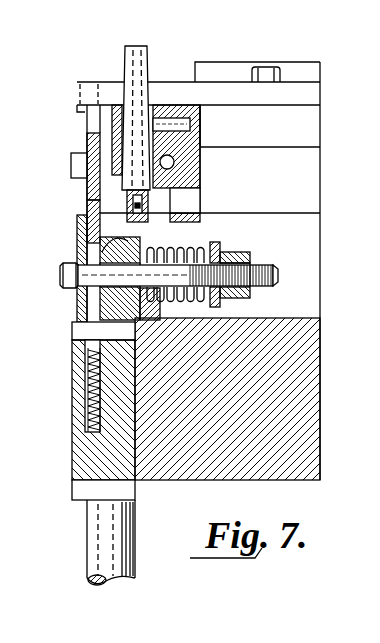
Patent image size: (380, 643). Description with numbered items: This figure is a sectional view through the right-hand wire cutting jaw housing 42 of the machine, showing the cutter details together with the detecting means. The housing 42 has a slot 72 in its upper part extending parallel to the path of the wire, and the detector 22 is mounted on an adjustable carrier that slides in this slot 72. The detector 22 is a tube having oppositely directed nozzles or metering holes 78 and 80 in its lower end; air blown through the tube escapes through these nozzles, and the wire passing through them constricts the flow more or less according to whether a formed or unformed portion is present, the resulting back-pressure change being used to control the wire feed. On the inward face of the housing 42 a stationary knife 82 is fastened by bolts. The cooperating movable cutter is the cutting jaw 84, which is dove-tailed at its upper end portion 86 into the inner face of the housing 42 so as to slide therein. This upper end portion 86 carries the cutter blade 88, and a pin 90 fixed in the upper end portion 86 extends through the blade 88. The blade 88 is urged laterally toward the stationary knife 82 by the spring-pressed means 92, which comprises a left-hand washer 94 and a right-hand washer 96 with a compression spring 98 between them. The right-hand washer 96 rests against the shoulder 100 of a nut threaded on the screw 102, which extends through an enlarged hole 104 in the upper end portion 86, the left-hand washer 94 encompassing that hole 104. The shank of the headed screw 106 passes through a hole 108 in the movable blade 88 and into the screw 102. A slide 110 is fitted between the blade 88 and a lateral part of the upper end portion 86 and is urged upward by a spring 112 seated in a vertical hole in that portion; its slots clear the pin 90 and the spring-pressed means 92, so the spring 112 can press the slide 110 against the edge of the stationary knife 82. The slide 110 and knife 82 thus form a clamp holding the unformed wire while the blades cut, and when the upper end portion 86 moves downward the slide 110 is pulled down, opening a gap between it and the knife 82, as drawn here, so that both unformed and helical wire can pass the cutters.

The detector 22 is at (148, 52).
The slot 72 is at (305, 135).
The stationary knife 82 is at (87, 140).
The slide 110 is at (93, 215).
The nozzle 78 is at (133, 205).
The nozzle 80 is at (146, 205).
The cutter blade 88 is at (77, 235).
The hole 108 is at (105, 242).
The enlarged hole 104 is at (170, 246).
The left-hand washer 94 is at (150, 293).
The headed screw 106 is at (60, 275).
The screw 102 is at (272, 278).
The spring-pressed means 92 is at (238, 241).
The compression spring 98 is at (212, 300).
The right-hand washer 96 is at (236, 252).
The shoulder 100 is at (252, 258).
The right-hand jaw housing 42 is at (320, 255).
The pin 90 is at (72, 332).
The upper end portion 86 is at (72, 428).
The spring 112 is at (92, 402).
The cutting jaw 84 is at (72, 492).